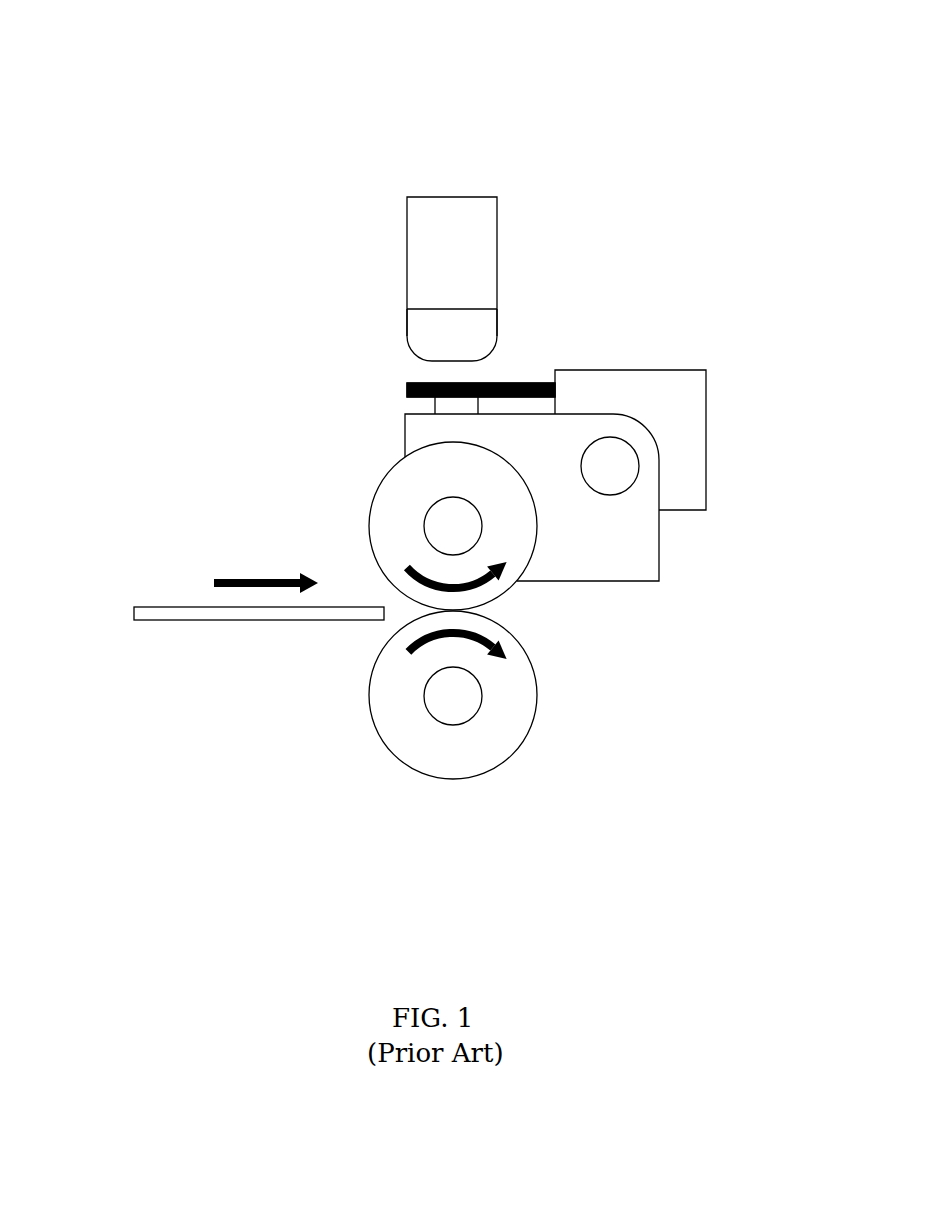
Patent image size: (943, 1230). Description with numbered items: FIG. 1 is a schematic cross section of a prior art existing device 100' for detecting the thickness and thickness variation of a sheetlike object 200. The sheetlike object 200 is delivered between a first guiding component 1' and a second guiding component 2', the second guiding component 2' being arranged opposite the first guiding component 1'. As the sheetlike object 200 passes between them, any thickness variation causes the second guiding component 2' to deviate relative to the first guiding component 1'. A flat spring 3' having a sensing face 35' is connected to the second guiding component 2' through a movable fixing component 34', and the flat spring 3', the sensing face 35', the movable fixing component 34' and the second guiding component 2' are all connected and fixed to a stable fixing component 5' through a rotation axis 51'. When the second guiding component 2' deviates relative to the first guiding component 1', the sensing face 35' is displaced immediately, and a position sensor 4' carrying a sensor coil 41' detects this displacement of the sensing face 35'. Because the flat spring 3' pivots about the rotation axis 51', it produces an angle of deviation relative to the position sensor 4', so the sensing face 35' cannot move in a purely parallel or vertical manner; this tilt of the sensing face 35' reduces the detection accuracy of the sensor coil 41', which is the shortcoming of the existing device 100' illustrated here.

The existing device 100' is at (522, 430).
The position sensor 4' is at (482, 266).
The sensor coil 41' is at (494, 314).
The sensing face 35' is at (431, 353).
The flat spring 3' is at (400, 415).
The movable fixing component 34' is at (459, 497).
The stable fixing component 5' is at (669, 411).
The rotation axis 51' is at (700, 437).
The second guiding component 2' is at (581, 526).
The first guiding component 1' is at (520, 695).
The sheetlike object 200 is at (158, 612).